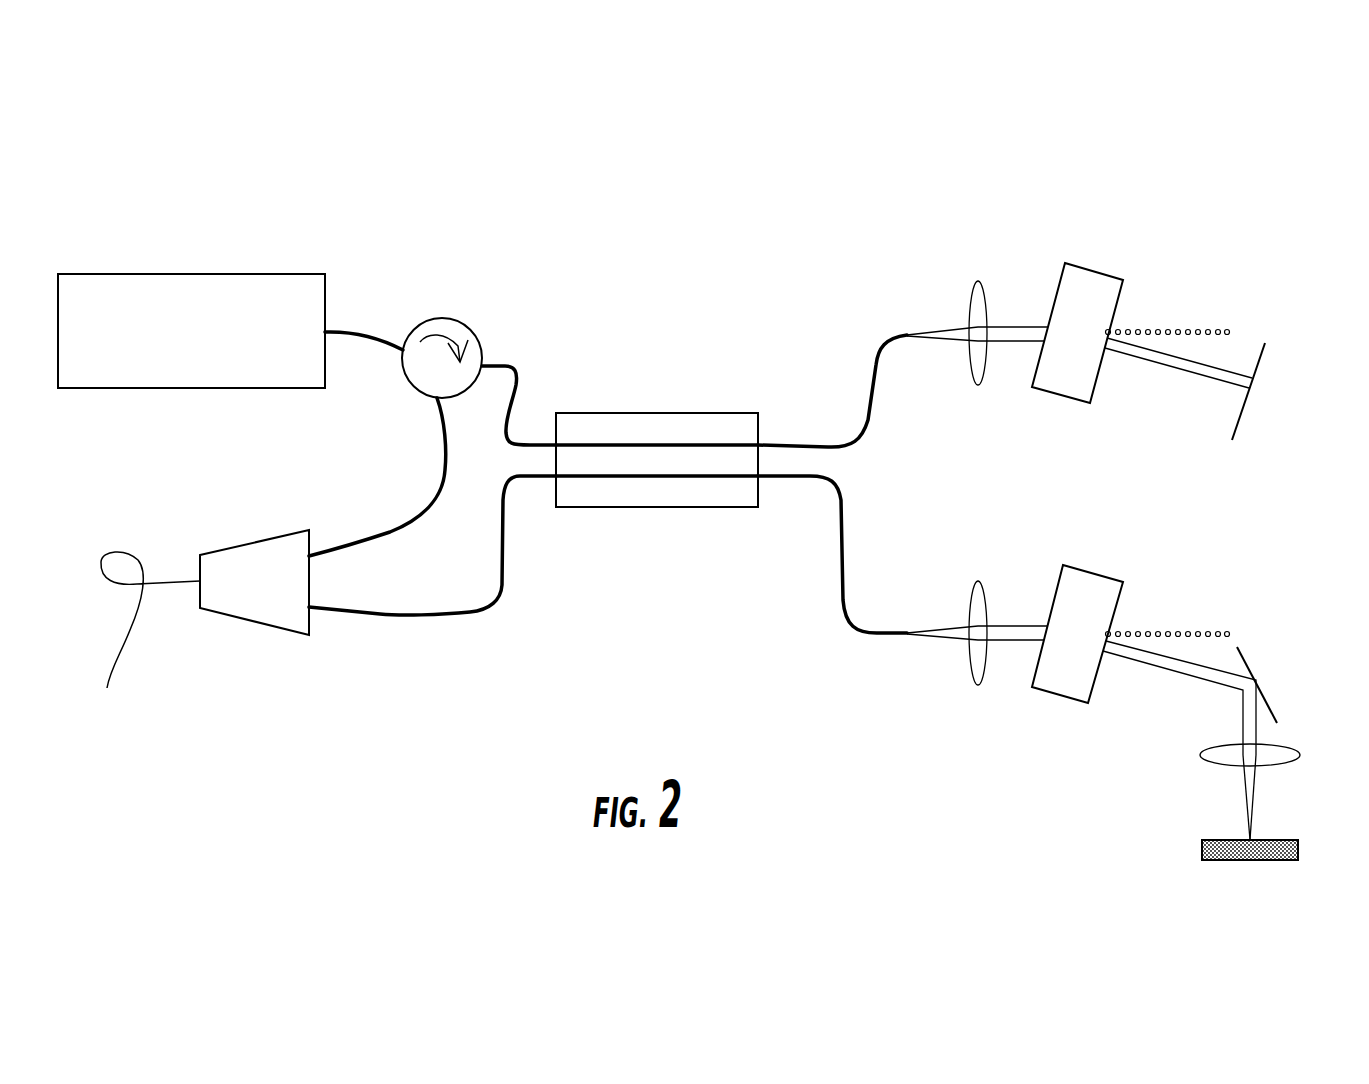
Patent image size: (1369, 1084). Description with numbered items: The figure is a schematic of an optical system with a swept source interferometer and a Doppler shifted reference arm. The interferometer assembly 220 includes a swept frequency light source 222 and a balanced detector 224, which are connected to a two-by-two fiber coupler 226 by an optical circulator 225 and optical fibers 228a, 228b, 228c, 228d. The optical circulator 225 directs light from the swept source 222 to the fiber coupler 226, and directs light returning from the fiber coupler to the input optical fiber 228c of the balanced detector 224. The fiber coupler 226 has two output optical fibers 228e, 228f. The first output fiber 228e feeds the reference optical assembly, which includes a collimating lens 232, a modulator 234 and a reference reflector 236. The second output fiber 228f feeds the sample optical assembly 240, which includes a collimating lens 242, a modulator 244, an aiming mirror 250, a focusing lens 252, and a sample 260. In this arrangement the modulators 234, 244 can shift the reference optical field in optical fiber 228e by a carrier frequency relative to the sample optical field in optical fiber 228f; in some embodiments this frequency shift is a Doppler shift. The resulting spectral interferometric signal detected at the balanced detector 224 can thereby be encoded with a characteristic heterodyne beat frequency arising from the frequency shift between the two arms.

The interferometer assembly 220 is at (347, 209).
The swept frequency light source 222 is at (121, 274).
The balanced detector 224 is at (250, 545).
The optical circulator 225 is at (405, 378).
The 2×2 fiber coupler 226 is at (707, 413).
The optical fiber 228a is at (375, 330).
The optical fiber 228b is at (516, 368).
The input optical fiber 228c is at (360, 542).
The optical fiber 228d is at (412, 613).
The output optical fiber 228e is at (893, 336).
The output optical fiber 228f is at (843, 560).
The collimating lens 232 is at (970, 382).
The modulator 234 is at (1115, 312).
The reference reflector 236 is at (1263, 353).
The sample optical assembly 240 is at (1247, 589).
The collimating lens 242 is at (978, 583).
The modulator 244 is at (1053, 703).
The aiming mirror 250 is at (1250, 672).
The focusing lens 252 is at (1298, 754).
The sample 260 is at (1300, 830).